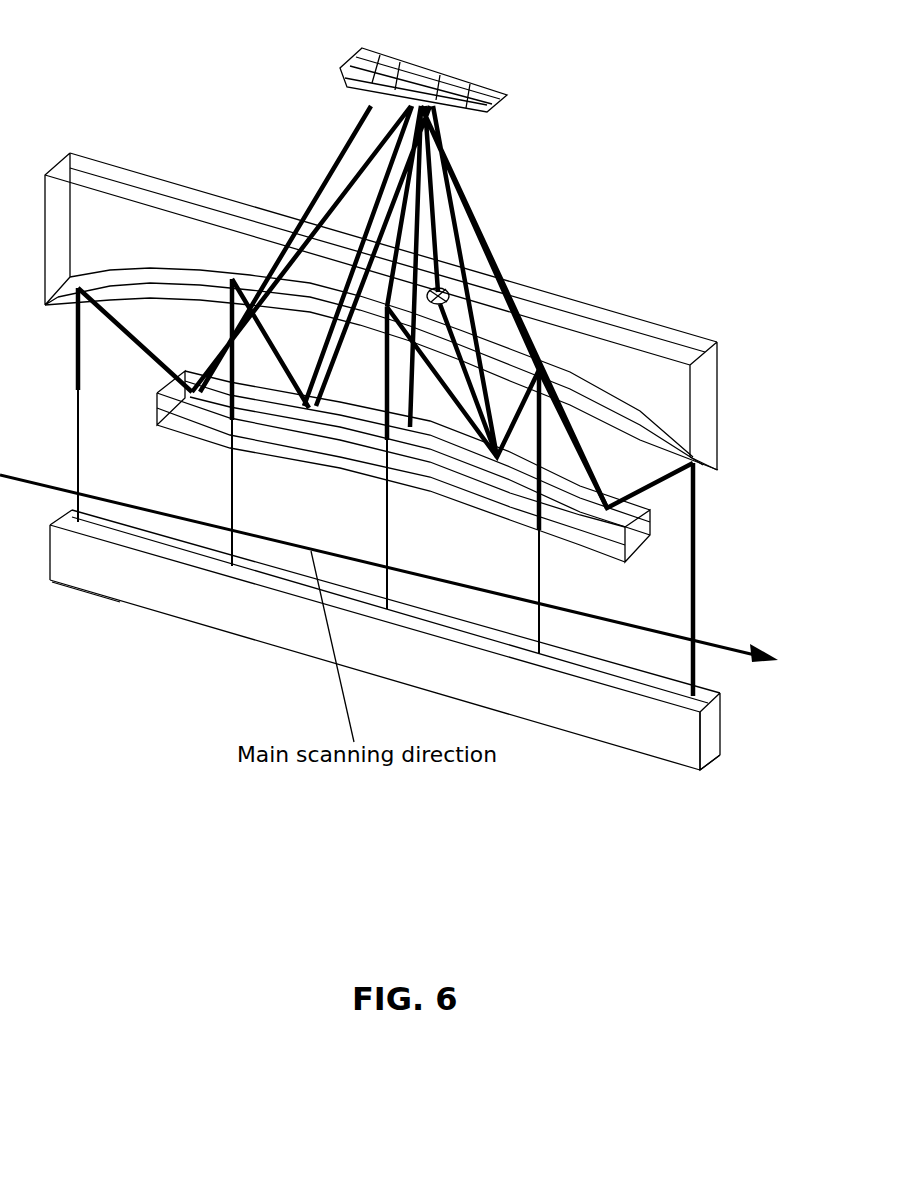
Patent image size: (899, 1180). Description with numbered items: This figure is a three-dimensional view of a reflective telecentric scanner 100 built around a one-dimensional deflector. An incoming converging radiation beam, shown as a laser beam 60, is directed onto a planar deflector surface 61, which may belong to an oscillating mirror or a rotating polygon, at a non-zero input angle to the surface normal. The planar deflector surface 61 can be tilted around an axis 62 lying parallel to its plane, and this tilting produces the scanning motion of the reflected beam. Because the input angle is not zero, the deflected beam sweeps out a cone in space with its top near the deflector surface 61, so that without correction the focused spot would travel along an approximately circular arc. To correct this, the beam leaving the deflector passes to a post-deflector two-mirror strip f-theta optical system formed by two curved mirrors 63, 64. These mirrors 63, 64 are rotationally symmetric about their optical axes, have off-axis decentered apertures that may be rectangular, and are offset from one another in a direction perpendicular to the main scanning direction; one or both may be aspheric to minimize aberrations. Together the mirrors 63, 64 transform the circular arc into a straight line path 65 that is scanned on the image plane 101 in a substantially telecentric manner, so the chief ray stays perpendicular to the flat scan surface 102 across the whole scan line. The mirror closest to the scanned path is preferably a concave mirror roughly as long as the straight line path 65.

The optical scanning device 100 is at (108, 108).
The laser beam 60 is at (458, 273).
The planar deflector surface 61 is at (490, 87).
The axis 62 is at (473, 25).
The curved mirror 63 is at (650, 510).
The curved mirror 64 is at (202, 292).
The straight line path 65 is at (133, 538).
The image plane 101 is at (696, 692).
The scanned surface 102 is at (551, 710).